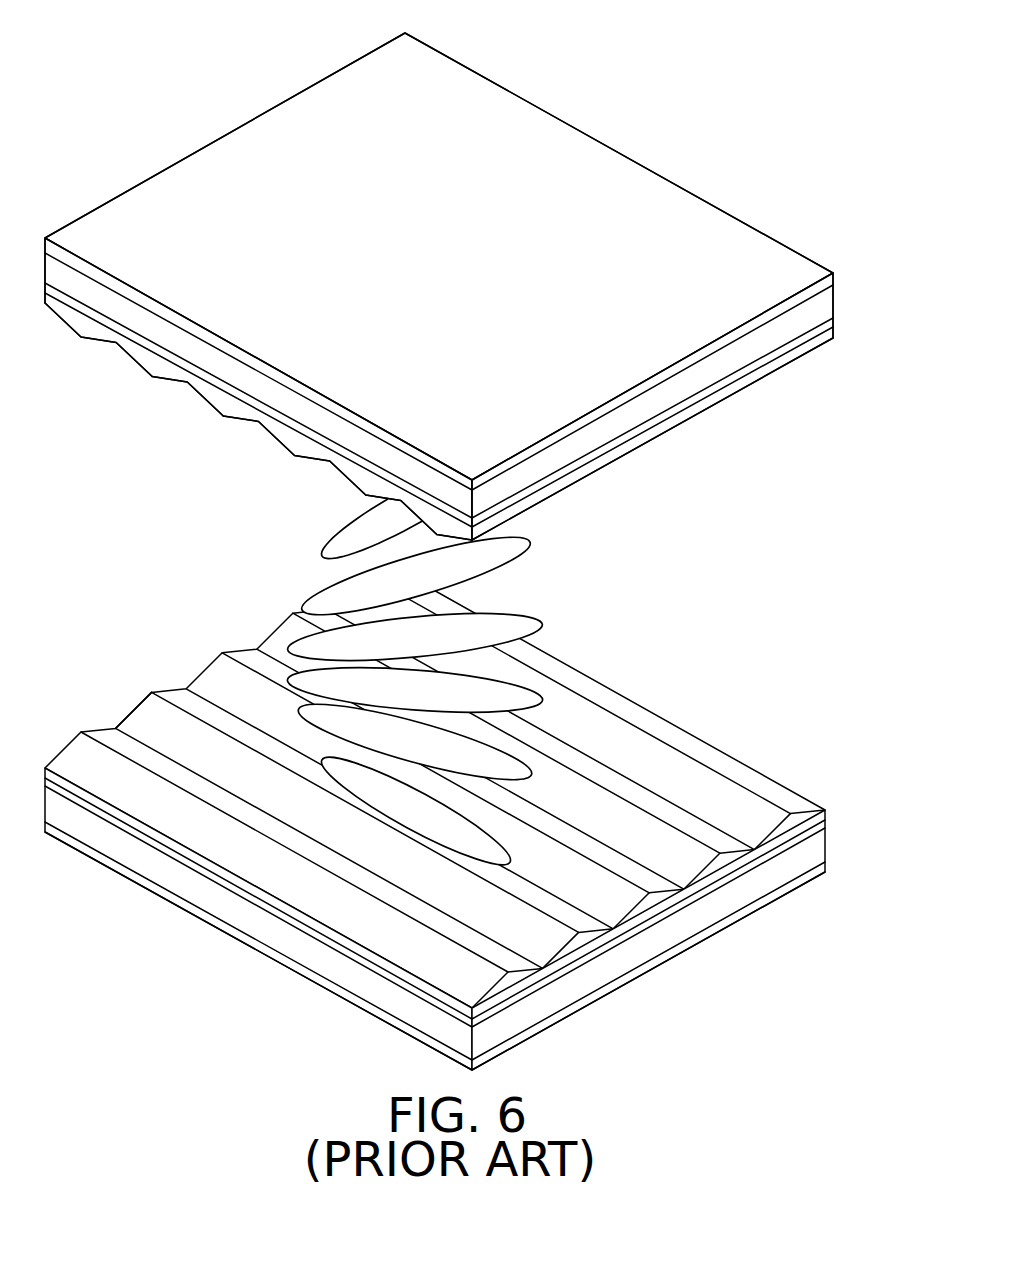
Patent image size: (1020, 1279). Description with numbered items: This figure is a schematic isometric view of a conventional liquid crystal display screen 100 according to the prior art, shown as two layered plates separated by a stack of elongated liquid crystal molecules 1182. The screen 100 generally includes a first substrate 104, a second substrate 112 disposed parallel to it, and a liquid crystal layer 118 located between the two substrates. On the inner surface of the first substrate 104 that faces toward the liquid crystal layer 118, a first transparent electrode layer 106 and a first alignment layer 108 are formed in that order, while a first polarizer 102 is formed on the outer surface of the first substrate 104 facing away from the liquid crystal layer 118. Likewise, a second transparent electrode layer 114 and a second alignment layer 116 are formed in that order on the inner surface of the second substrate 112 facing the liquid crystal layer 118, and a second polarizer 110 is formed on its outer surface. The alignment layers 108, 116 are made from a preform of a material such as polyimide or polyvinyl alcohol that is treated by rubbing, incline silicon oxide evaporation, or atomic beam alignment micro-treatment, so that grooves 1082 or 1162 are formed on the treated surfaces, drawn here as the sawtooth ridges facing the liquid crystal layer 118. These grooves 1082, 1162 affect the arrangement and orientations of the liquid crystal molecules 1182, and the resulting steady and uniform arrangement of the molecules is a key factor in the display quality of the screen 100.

The liquid crystal display screen 100 is at (533, 48).
The first polarizer 102 is at (540, 1027).
The first substrate 104 is at (583, 983).
The first transparent electrode layer 106 is at (658, 920).
The first alignment layer 108 is at (435, 789).
The grooves 1082 is at (142, 718).
The second polarizer 110 is at (758, 325).
The second substrate 112 is at (662, 402).
The second transparent electrode layer 114 is at (617, 447).
The second alignment layer 116 is at (439, 421).
The grooves 1162 is at (193, 384).
The liquid crystal layer 118 is at (484, 688).
The liquid crystal molecules 1182 is at (527, 627).